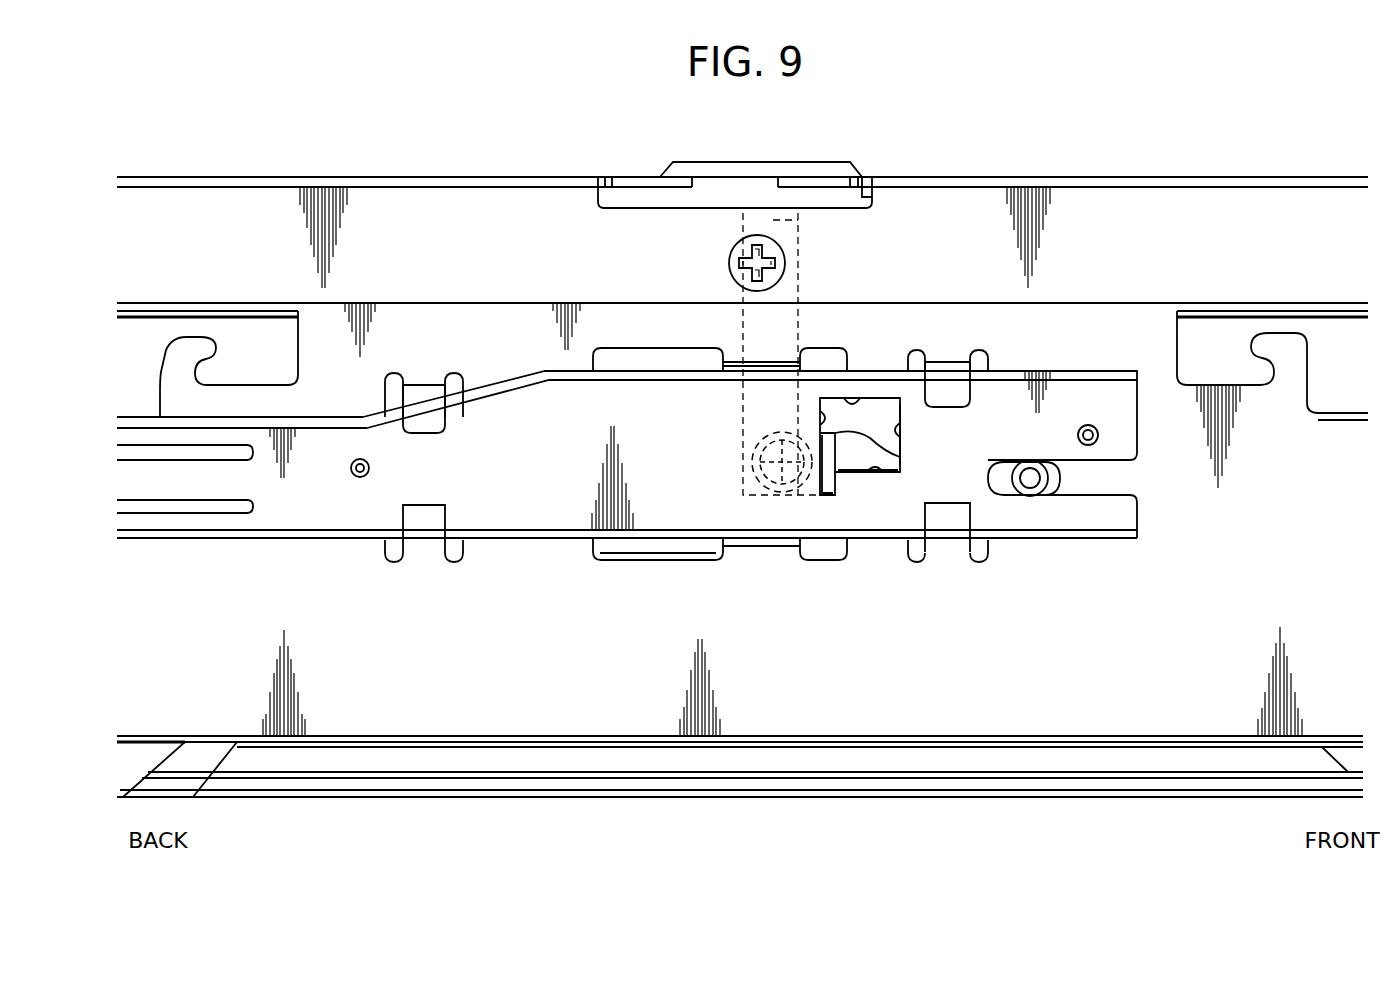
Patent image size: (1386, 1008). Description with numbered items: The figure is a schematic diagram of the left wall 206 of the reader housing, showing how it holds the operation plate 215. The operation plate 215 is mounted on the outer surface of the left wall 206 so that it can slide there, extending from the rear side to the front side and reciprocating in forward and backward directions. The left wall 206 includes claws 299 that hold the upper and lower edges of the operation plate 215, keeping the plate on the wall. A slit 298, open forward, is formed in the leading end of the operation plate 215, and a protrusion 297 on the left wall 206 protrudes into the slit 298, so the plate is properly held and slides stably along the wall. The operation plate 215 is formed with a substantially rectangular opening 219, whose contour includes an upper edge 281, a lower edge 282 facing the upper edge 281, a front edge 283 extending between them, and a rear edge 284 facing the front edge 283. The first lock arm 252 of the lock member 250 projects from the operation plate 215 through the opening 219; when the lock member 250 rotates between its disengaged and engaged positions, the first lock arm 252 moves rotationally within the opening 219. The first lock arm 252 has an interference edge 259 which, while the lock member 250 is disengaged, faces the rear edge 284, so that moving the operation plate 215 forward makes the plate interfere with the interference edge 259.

The left wall 206 is at (1111, 340).
The lock member 250 is at (797, 275).
The opening 219 is at (878, 415).
The operation plate 215 is at (577, 503).
The claws 299 is at (426, 413).
The upper edge 281 is at (862, 405).
The interference edge 259 is at (897, 462).
The front edge 283 is at (900, 436).
The first lock arm 252 is at (838, 485).
The lower edge 282 is at (890, 473).
The rear edge 284 is at (820, 420).
The protrusion 297 is at (1030, 487).
The slit 298 is at (1110, 487).